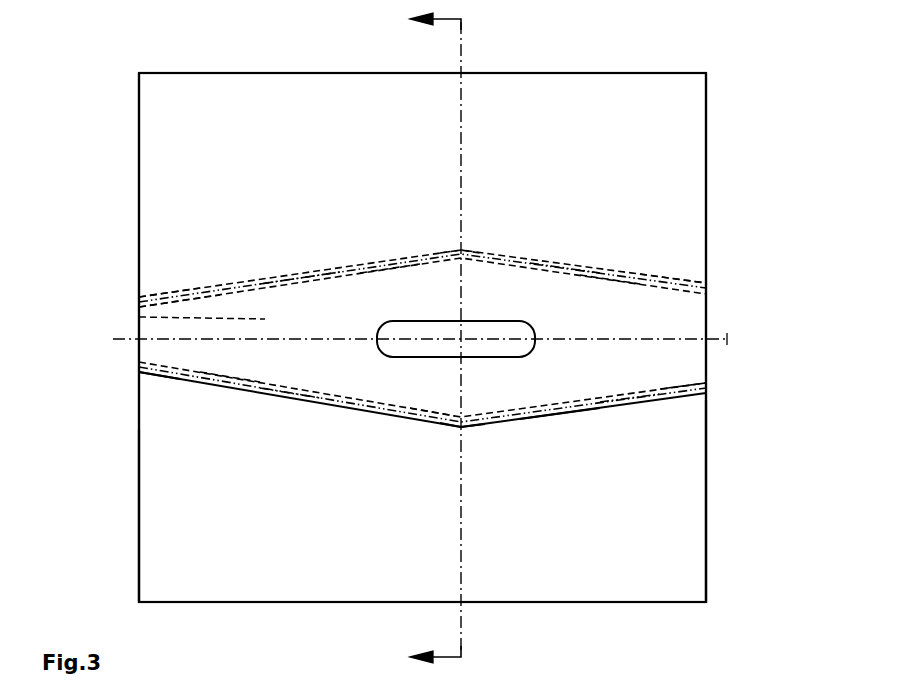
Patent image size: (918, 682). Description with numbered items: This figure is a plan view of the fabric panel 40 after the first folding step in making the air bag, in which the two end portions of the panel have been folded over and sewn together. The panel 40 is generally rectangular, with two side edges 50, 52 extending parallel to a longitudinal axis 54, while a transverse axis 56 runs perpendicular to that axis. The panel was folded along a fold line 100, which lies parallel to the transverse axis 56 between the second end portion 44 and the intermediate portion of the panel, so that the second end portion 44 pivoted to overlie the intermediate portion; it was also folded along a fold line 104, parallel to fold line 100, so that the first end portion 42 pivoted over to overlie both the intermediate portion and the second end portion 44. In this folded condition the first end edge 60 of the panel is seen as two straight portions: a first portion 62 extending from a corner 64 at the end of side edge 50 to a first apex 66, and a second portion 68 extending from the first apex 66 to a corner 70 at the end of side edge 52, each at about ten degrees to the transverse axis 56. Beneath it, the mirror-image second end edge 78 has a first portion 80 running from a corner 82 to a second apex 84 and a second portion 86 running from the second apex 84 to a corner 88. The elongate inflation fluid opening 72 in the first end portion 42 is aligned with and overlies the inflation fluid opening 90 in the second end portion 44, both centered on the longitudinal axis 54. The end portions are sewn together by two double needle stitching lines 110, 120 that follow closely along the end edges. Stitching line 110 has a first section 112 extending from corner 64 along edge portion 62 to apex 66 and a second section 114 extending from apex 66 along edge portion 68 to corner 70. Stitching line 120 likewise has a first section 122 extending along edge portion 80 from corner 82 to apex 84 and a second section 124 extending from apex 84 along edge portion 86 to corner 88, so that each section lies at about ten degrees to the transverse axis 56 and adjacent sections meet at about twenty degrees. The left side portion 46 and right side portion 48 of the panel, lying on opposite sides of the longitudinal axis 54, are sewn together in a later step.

The panel 40 is at (205, 50).
The first end portion 42 is at (548, 397).
The second end portion 44 is at (139, 317).
The left side portion 46 is at (177, 537).
The right side portion 48 is at (652, 548).
The side edge 50 is at (139, 113).
The side edge 52 is at (706, 176).
The longitudinal axis 54 is at (459, 68).
The transverse axis 56 is at (727, 338).
The first end edge 60 is at (310, 415).
The first portion of first end edge 62 is at (233, 388).
The corner 64 is at (139, 371).
The first apex 66 is at (468, 427).
The second portion of first end edge 68 is at (553, 415).
The corner 70 is at (706, 392).
The inflation fluid opening 72 is at (535, 340).
The second end edge 78 is at (251, 270).
The first portion of second end edge 80 is at (200, 292).
The corner 82 is at (142, 297).
The second apex 84 is at (461, 252).
The second portion of second end edge 86 is at (558, 265).
The corner 88 is at (706, 283).
The inflation fluid opening 90 is at (452, 322).
The fold line 100 is at (560, 602).
The fold line 104 is at (533, 74).
The stitching line 110 is at (437, 400).
The first section of stitching line 112 is at (286, 387).
The second section of stitching line 114 is at (630, 393).
The stitching line 120 is at (389, 282).
The first section of stitching line 122 is at (272, 291).
The second section of stitching line 124 is at (600, 283).